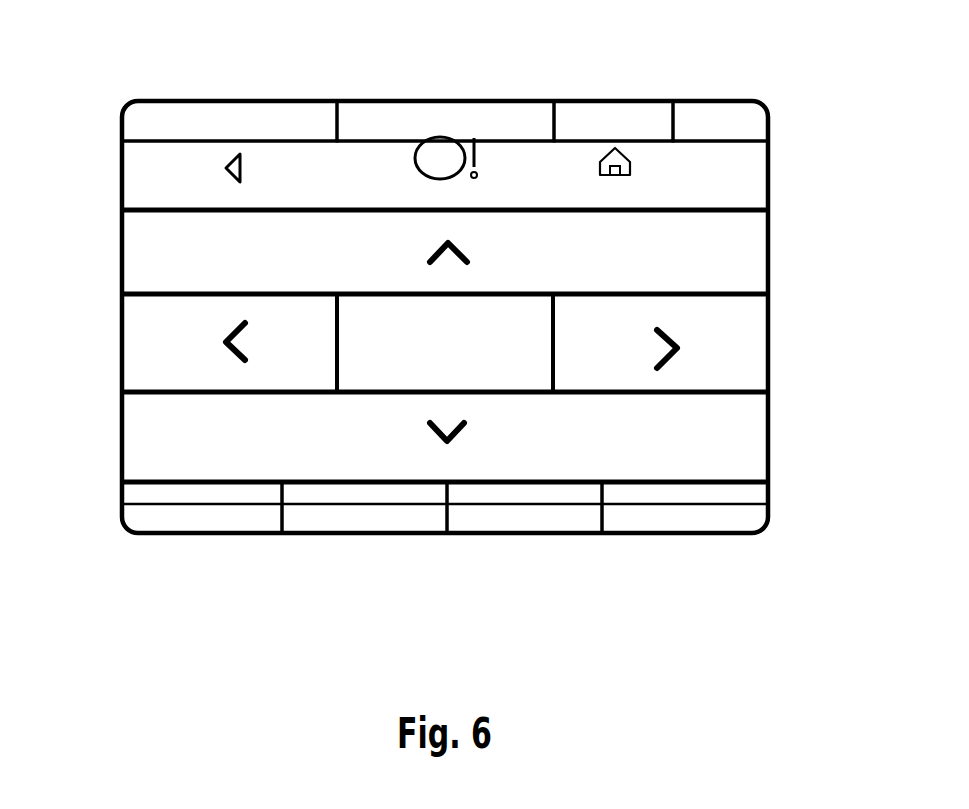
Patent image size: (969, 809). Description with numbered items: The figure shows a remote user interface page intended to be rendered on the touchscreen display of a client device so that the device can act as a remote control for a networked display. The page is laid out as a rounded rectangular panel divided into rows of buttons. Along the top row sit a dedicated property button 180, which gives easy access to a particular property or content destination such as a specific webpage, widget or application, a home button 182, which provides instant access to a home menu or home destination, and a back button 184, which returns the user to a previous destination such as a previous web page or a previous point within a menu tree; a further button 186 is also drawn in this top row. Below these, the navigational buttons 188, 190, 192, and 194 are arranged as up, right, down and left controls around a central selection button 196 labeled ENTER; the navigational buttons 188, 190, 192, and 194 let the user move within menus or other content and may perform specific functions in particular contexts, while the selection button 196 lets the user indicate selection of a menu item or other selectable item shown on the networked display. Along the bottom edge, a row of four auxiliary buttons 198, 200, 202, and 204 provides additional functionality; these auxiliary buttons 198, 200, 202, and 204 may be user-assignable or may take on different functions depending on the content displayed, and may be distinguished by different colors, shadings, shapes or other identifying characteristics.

The dedicated property button 180 is at (435, 118).
The home button 182 is at (602, 118).
The back button 184 is at (232, 118).
The help button 186 is at (722, 118).
The navigational button 188 is at (753, 258).
The navigational button 190 is at (748, 360).
The navigational button 192 is at (748, 452).
The navigational button 194 is at (138, 350).
The selection button 196 is at (385, 372).
The auxiliary button 198 is at (210, 515).
The auxiliary button 200 is at (350, 515).
The auxiliary button 202 is at (514, 515).
The auxiliary button 204 is at (688, 515).